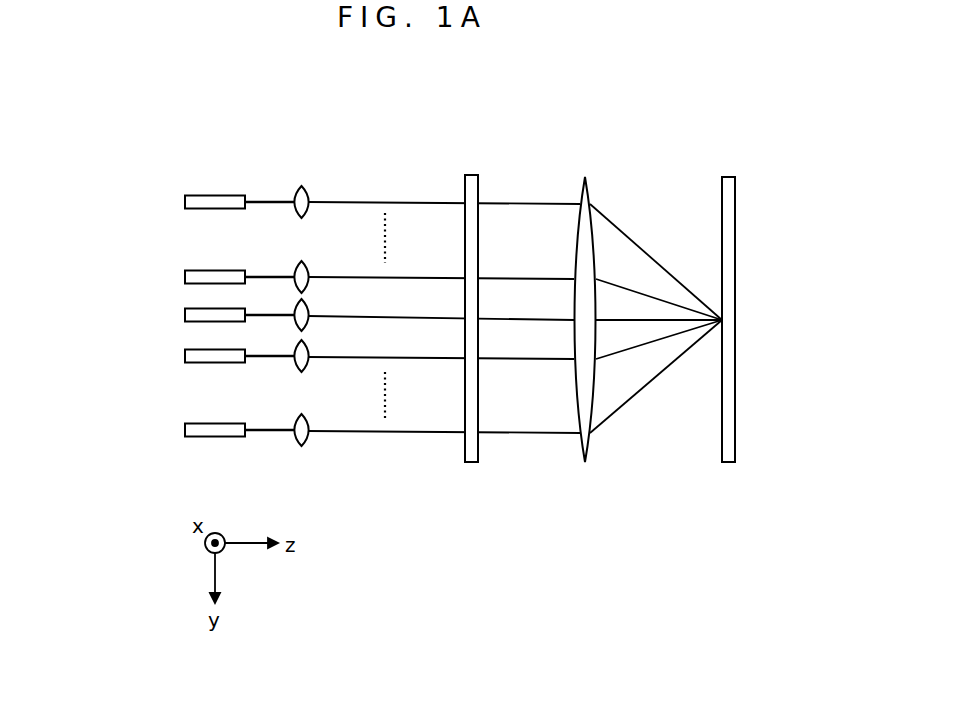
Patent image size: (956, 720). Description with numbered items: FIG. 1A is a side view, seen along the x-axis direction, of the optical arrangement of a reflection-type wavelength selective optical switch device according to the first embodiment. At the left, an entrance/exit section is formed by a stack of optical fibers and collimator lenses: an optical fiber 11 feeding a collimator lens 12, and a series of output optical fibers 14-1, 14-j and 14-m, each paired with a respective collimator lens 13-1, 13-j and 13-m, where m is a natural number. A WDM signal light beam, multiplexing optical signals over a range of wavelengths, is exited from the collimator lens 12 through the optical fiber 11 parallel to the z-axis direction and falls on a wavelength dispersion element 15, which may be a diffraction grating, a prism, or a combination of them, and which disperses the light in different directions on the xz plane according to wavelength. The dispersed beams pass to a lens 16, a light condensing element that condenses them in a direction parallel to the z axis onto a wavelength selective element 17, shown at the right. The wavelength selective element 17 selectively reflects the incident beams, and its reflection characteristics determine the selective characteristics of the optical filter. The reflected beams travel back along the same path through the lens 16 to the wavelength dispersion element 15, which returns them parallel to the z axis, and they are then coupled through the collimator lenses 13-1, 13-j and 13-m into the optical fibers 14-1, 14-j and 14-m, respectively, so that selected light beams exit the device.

The optical fiber 11 is at (186, 316).
The collimator lens 12 is at (296, 323).
The collimator lens 13-1 is at (293, 195).
The collimator lens 13-j is at (293, 268).
The collimator lens 13-m is at (293, 437).
The optical fiber 14-1 is at (207, 195).
The optical fiber 14-j is at (207, 270).
The optical fiber 14-m is at (207, 437).
The wavelength dispersion element 15 is at (480, 186).
The lens 16 is at (590, 190).
The wavelength selective element 17 is at (735, 188).